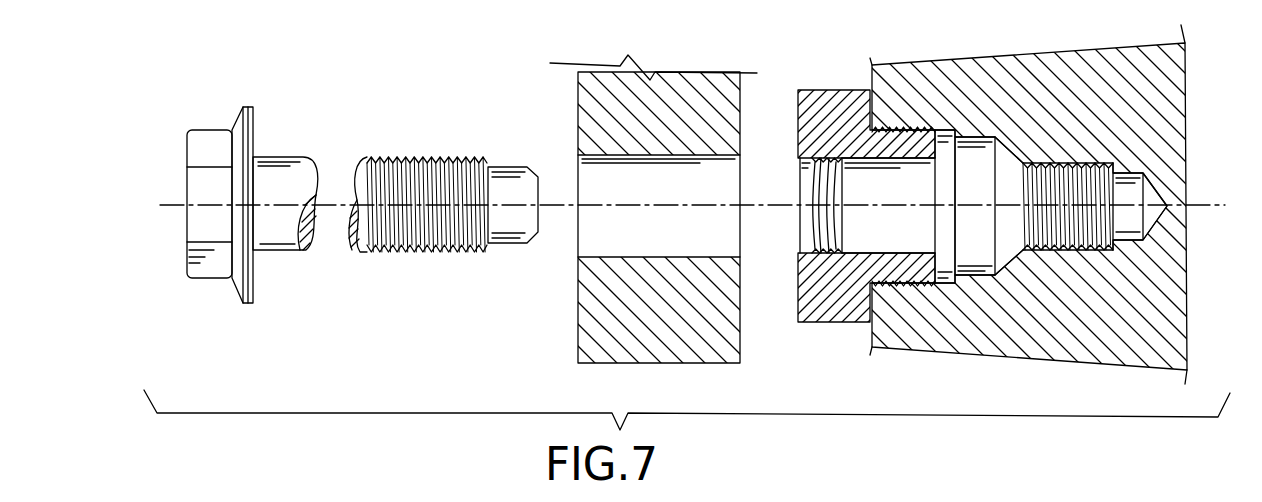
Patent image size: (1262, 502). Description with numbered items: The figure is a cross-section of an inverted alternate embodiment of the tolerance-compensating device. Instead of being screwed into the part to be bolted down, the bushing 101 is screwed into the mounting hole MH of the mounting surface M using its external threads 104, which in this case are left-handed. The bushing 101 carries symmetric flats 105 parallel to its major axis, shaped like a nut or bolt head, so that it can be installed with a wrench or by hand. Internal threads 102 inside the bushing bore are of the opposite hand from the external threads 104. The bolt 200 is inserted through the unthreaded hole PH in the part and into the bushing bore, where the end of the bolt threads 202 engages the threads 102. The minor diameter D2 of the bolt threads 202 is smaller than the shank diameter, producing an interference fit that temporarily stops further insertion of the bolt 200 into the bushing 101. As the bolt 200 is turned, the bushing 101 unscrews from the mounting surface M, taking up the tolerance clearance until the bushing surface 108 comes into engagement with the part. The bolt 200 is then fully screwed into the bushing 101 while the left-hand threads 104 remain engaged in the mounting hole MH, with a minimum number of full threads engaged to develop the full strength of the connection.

The bolt 200 is at (430, 148).
The bolt threads 202 is at (413, 250).
The minor diameter of threads D2 is at (500, 292).
The hole in part PH is at (597, 240).
The threads 102 is at (815, 187).
The bushing surface 108 is at (800, 133).
The bushing 101 is at (830, 275).
The flats 105 is at (853, 322).
The external threads 104 is at (905, 284).
The mounting hole MH is at (1080, 163).
The mounting surface M is at (1080, 313).